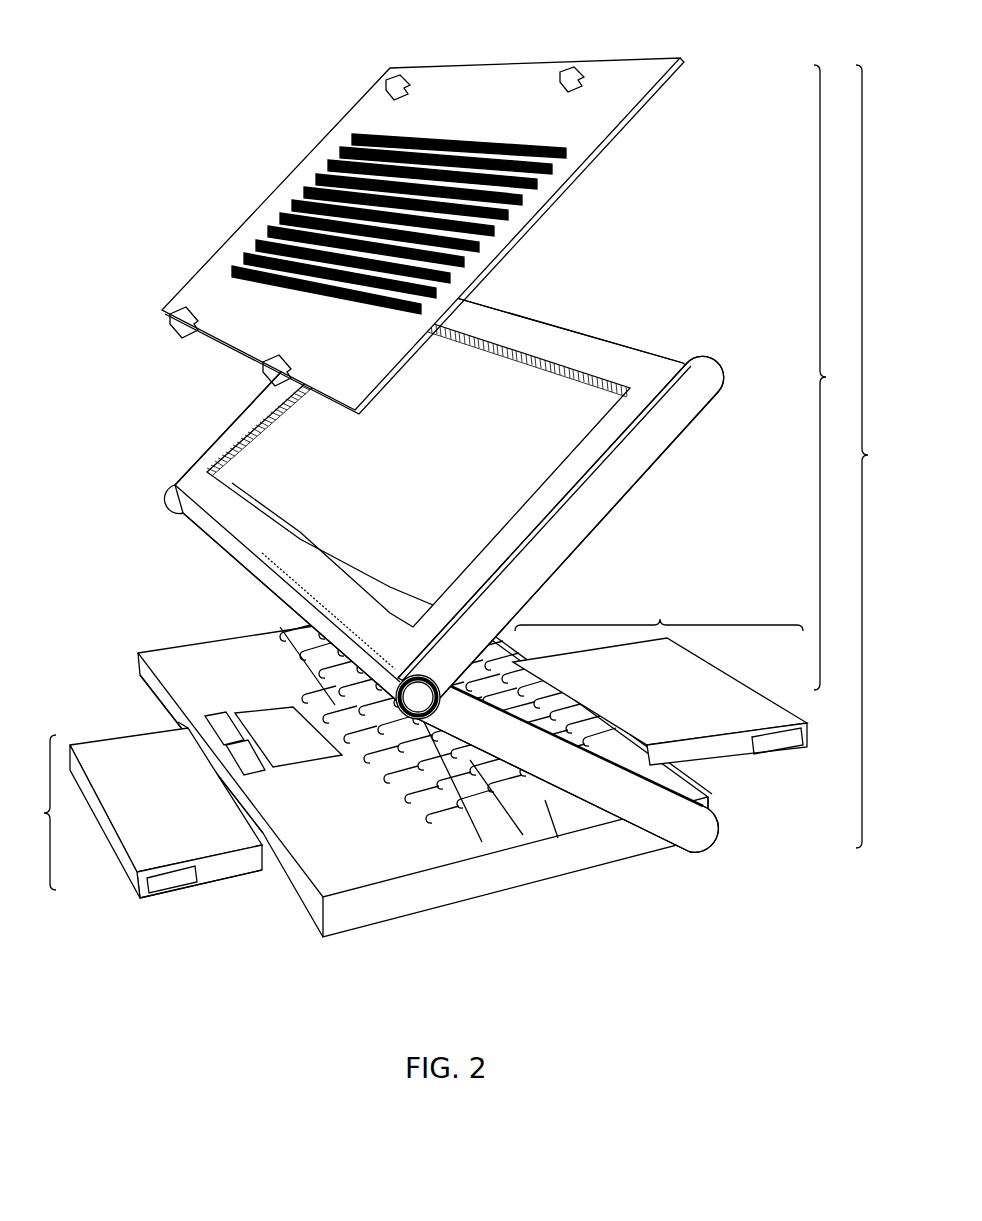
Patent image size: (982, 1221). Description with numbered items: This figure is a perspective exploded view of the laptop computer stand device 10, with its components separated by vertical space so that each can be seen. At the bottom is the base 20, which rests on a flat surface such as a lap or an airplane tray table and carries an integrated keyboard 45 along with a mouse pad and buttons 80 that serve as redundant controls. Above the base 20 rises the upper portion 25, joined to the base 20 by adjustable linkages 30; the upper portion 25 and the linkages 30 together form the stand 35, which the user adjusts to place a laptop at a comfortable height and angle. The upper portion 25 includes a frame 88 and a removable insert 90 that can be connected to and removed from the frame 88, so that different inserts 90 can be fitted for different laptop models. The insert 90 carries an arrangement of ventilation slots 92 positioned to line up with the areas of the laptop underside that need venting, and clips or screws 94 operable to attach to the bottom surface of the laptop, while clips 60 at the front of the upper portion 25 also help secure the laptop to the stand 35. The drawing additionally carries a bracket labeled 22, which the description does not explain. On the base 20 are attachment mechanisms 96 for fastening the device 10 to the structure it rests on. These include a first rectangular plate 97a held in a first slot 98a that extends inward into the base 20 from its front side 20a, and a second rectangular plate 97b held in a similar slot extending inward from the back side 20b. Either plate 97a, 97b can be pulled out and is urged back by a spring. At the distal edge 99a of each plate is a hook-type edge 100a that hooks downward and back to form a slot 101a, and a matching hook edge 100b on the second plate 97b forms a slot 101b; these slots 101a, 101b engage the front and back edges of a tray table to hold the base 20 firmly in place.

The laptop computer stand device 10 is at (88, 76).
The base 20 is at (480, 900).
The front side of the base 20a is at (304, 887).
The back side of the base 20b is at (704, 794).
The display assembly 22 is at (841, 377).
The upper portion 25 is at (669, 448).
The adjustable linkages 30 is at (356, 567).
The stand 35 is at (882, 456).
The integrated keyboard 45 is at (212, 675).
The clips 60 is at (185, 325).
The mouse pad and buttons 80 is at (307, 745).
The frame 88 is at (559, 320).
The removable insert 90 is at (651, 100).
The ventilation slots 92 is at (308, 295).
The clips or screws 94 is at (408, 92).
The attachment mechanisms 96 is at (410, 739).
The first rectangular plate 97a is at (179, 802).
The second rectangular plate 97b is at (697, 709).
The first slot 98a is at (180, 725).
The distal edge 99a is at (134, 881).
The hook-type edge 100a is at (190, 901).
The hook edge 100b is at (803, 762).
The slot 101a is at (171, 874).
The slot 101b is at (784, 740).